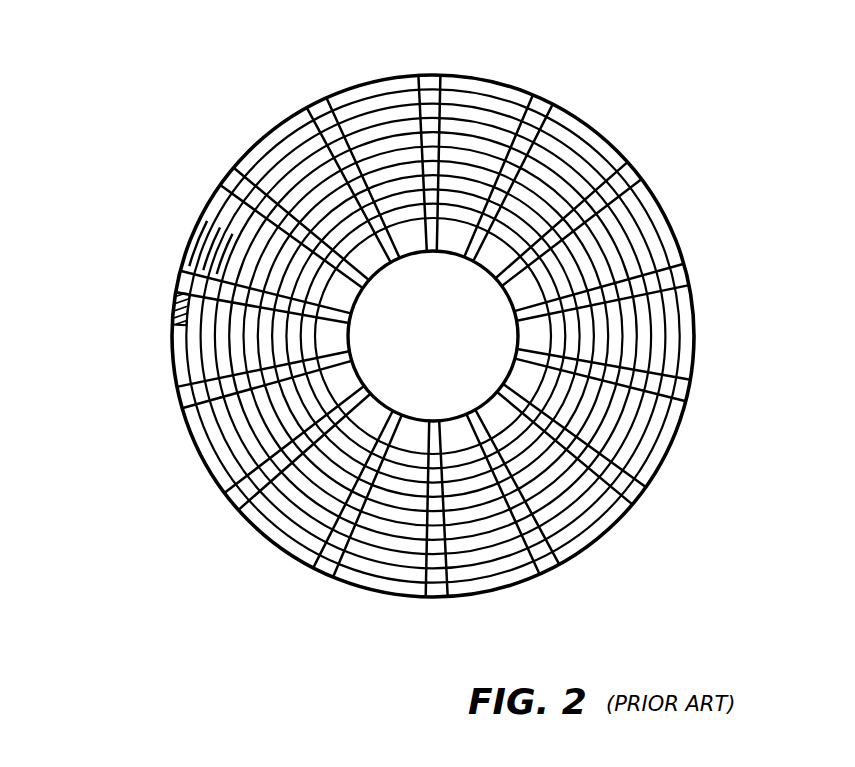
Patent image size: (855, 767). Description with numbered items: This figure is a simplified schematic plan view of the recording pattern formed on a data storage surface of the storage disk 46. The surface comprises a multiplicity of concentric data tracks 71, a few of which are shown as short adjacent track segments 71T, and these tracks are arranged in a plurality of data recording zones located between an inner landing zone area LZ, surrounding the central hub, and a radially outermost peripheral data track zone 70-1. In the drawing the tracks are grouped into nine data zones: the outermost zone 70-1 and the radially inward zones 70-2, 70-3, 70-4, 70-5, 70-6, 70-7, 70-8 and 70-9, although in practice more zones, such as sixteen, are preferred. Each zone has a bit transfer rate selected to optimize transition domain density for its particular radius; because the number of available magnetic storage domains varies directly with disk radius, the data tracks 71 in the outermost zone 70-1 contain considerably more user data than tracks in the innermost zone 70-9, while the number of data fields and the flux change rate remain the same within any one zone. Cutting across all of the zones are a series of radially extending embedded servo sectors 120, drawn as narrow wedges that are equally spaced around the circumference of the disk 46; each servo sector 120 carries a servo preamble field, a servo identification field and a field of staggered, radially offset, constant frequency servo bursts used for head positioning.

The storage disk 46 is at (126, 563).
The outermost data zone 70-1 is at (588, 132).
The data zone 70-2 is at (651, 228).
The data zone 70-3 is at (657, 338).
The data zone 70-4 is at (620, 427).
The data zone 70-5 is at (552, 488).
The data zone 70-6 is at (333, 488).
The data zone 70-7 is at (285, 412).
The data zone 70-8 is at (282, 338).
The innermost data zone 70-9 is at (312, 270).
The data track 71 is at (174, 301).
The data tracks 71T is at (198, 250).
The embedded servo sector 120 is at (427, 85).
The landing zone LZ is at (360, 253).